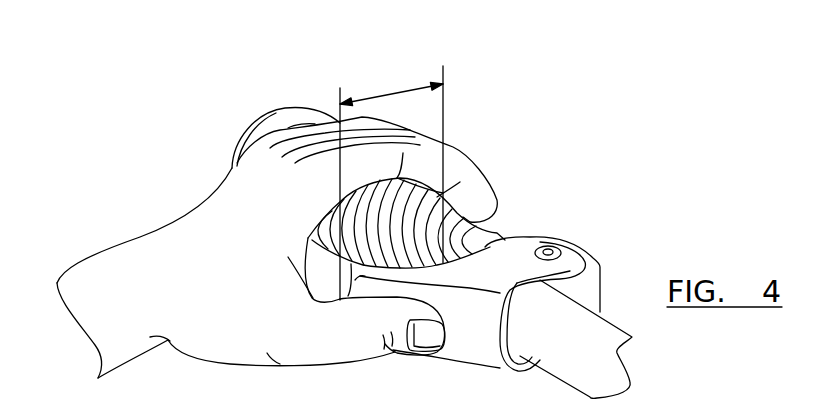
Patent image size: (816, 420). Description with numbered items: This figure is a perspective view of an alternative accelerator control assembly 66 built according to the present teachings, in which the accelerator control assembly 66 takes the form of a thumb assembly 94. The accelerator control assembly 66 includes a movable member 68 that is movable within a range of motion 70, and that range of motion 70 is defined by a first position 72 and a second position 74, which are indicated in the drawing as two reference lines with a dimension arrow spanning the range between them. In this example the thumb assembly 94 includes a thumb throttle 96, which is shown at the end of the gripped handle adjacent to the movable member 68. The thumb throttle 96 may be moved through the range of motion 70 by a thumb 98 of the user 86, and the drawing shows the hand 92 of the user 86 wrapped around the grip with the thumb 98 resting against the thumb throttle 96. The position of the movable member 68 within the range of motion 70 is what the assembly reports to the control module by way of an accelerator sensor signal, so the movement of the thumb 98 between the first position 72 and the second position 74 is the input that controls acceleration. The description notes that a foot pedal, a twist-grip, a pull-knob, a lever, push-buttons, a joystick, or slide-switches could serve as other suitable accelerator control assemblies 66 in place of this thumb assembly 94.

The accelerator control assembly 66 is at (615, 232).
The movable member 68 is at (465, 333).
The range of motion 70 is at (397, 72).
The first position 72 is at (340, 179).
The second position 74 is at (443, 150).
The user 86 is at (74, 335).
The hand 92 is at (219, 276).
The thumb assembly 94 is at (553, 160).
The thumb throttle 96 is at (485, 355).
The thumb 98 is at (340, 351).